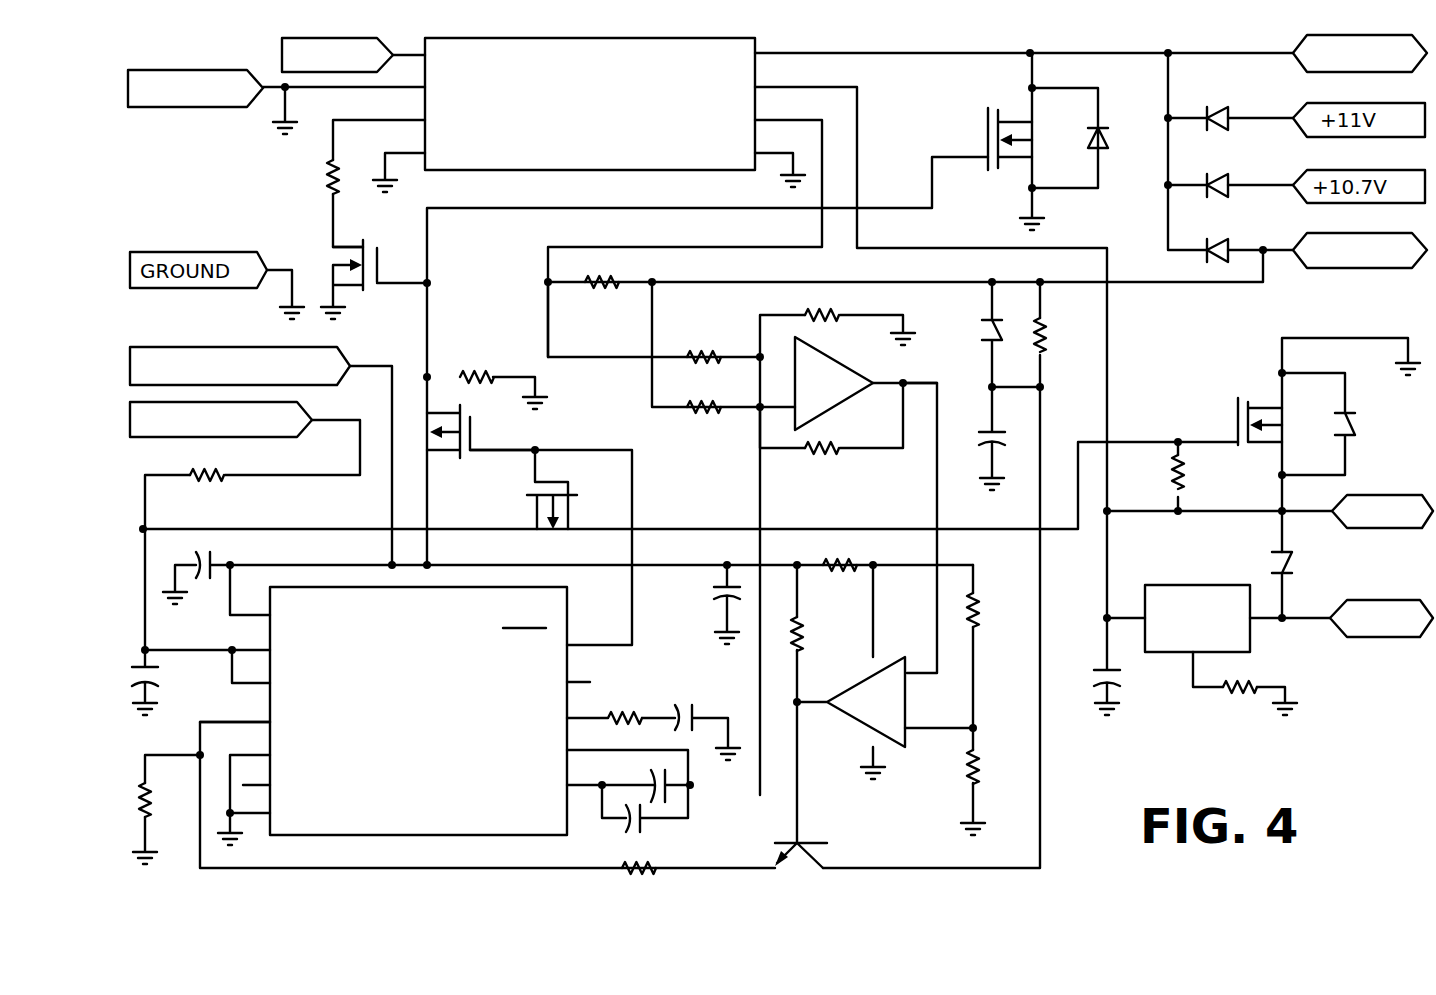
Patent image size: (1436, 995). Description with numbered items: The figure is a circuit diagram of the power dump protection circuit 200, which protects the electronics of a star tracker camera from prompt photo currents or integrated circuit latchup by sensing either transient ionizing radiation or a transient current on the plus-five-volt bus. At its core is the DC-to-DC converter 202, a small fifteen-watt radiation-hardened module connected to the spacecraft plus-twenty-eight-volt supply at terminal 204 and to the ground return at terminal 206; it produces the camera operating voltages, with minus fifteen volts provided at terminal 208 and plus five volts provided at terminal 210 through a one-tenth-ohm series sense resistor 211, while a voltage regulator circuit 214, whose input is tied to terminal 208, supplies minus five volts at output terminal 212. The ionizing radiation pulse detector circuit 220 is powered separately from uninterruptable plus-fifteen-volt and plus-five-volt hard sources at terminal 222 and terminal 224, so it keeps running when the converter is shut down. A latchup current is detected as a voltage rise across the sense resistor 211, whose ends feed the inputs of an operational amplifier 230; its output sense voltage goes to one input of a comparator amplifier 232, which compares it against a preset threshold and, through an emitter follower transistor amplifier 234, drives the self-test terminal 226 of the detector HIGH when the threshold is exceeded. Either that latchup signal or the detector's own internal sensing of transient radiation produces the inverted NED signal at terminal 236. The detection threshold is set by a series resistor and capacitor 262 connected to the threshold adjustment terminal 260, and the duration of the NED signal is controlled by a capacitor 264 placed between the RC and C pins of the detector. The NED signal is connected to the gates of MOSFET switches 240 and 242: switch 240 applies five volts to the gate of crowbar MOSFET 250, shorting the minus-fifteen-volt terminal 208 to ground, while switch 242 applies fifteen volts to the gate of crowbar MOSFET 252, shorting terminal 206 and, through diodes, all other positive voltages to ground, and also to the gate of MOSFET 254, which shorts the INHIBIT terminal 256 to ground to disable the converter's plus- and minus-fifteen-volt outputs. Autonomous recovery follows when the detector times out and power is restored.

The circuit 200 is at (1040, 53).
The DC-to-DC converter 202 is at (622, 63).
The terminal 204 is at (282, 50).
The terminal 206 is at (210, 107).
The terminal 208 is at (1372, 495).
The terminal 210 is at (1328, 270).
The series sense resistor 211 is at (612, 278).
The output terminal 212 is at (1367, 600).
The voltage regulator circuit 214 is at (1178, 585).
The ionizing radiation pulse detector circuit 220 is at (440, 617).
The terminal 222 is at (176, 345).
The terminal 224 is at (235, 438).
The self-test S/T terminal 226 is at (265, 722).
The operational amplifier 230 is at (852, 402).
The comparator amplifier 232 is at (888, 727).
The emitter follower transistor amplifier 234 is at (830, 867).
The terminal 236 is at (602, 645).
The MOSFET switch 240 is at (535, 493).
The MOSFET switch 242 is at (470, 432).
The crowbar MOSFET 250 is at (1235, 420).
The crowbar MOSFET 252 is at (988, 132).
The MOSFET 254 is at (370, 283).
The INHIBIT terminal 256 is at (367, 122).
The threshold adjustment terminal 260 is at (600, 685).
The threshold adjust network 262 is at (650, 750).
The timing capacitor 264 is at (588, 787).